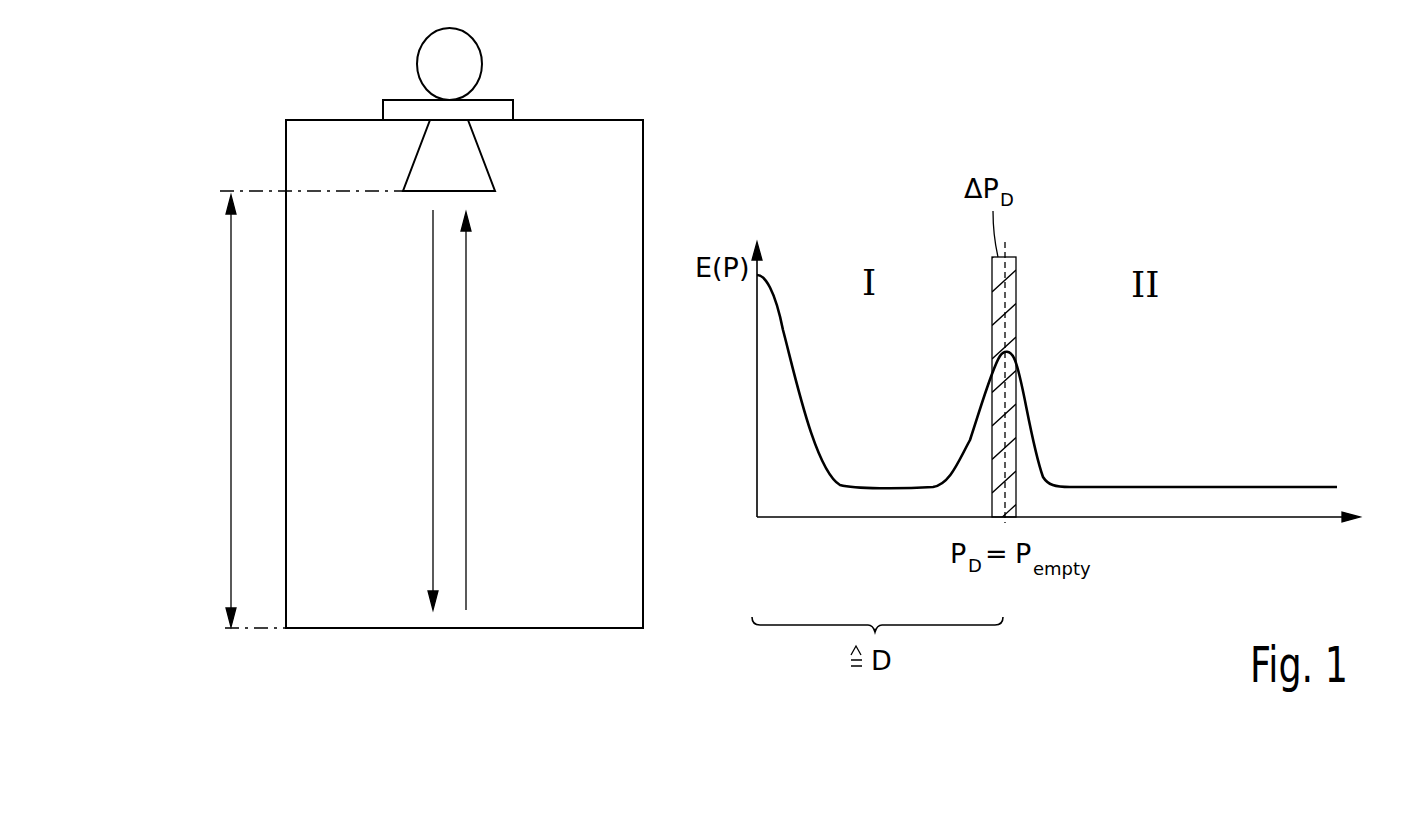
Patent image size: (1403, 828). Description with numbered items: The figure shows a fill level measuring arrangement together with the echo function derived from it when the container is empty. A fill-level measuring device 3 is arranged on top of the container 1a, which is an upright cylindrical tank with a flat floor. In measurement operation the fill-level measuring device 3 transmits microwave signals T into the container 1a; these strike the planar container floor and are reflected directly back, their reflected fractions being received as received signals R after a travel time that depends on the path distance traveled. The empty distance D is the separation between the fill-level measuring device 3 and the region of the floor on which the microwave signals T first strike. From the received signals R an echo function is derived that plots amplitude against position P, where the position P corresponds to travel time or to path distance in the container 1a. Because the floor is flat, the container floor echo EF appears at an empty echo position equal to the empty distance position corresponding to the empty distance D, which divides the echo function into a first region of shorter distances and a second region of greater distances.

The fill-level measuring device 3 is at (425, 62).
The container 1a is at (543, 628).
The empty distance D is at (222, 411).
The microwave signals T is at (424, 410).
The received signals R is at (476, 411).
The position P is at (1058, 535).
The container floor echo EF is at (985, 393).